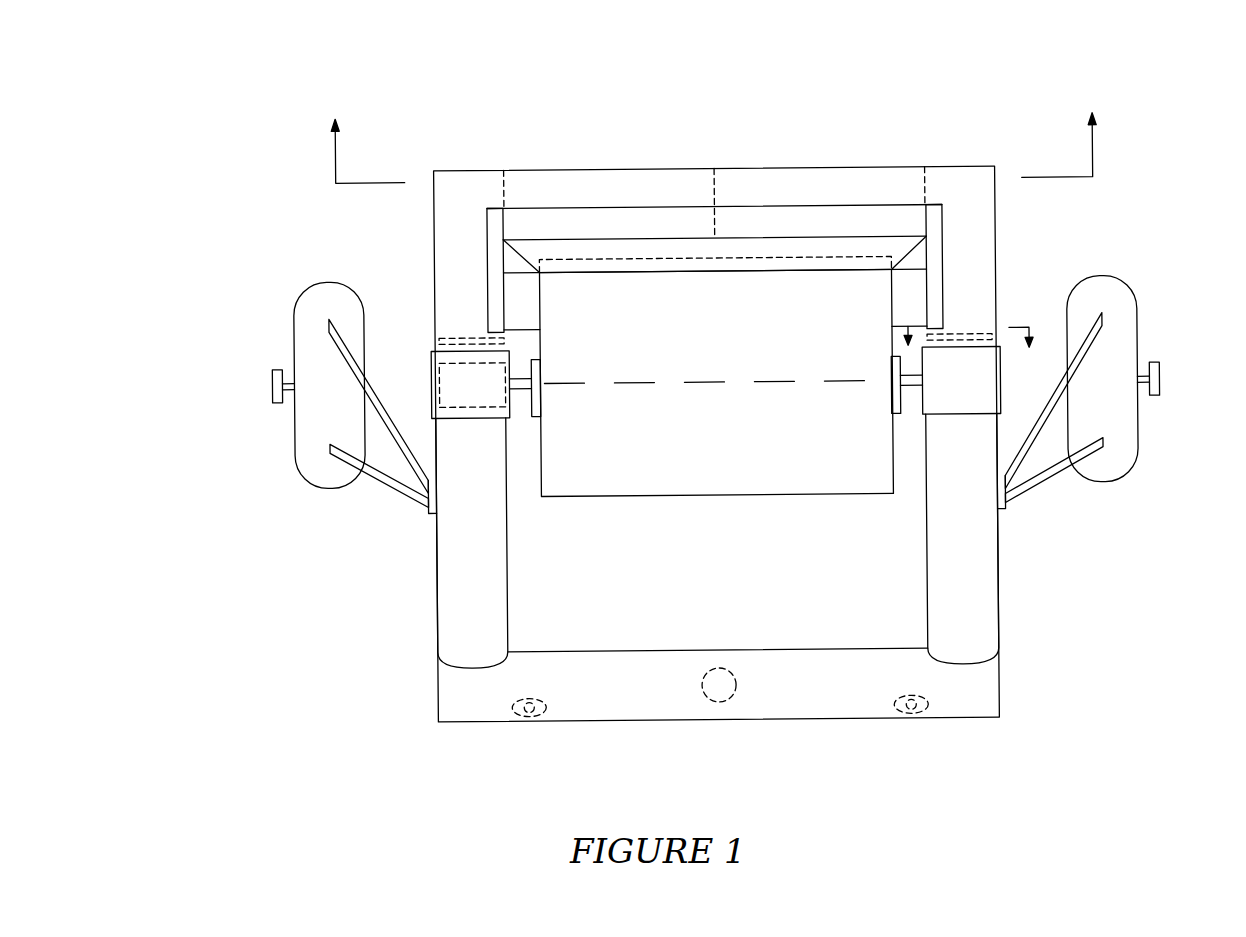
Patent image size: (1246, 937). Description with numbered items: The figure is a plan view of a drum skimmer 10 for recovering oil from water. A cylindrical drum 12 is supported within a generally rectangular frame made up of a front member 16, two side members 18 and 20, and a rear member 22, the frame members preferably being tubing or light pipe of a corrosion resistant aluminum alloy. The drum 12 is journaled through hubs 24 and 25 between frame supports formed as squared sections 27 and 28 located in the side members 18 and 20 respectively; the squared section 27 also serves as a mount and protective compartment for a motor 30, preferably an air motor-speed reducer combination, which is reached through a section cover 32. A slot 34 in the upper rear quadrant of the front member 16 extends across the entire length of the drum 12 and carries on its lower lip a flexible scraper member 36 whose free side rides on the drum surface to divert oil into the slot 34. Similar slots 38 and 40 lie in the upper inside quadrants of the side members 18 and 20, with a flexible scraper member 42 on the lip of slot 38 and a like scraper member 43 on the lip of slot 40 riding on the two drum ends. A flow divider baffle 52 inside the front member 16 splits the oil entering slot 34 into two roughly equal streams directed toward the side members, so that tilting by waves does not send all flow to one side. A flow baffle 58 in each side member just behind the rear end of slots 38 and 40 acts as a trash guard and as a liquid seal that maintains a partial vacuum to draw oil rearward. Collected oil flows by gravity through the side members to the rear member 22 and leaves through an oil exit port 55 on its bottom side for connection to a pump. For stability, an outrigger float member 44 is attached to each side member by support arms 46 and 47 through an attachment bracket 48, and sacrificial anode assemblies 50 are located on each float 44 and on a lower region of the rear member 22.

The drum skimmer 10 is at (707, 95).
The cylindrical drum 12 is at (748, 457).
The front member 16 is at (867, 171).
The side member 18 is at (462, 645).
The side member 20 is at (962, 645).
The rear member 22 is at (838, 683).
The hub 24 is at (537, 400).
The hub 25 is at (898, 402).
The squared section 27 is at (448, 360).
The squared section 28 is at (967, 380).
The motor 30 is at (470, 387).
The section cover 32 is at (432, 389).
The slot 34 is at (808, 213).
The flexible scraper member 36 is at (621, 247).
The slot 38 is at (493, 220).
The slot 40 is at (933, 232).
The flexible scraper member 42 is at (527, 290).
The scraper member 43 is at (907, 290).
The float member 44 is at (313, 440).
The support arm 46 is at (387, 427).
The support arm 47 is at (391, 487).
The attachment bracket 48 is at (427, 510).
The sacrificial anode assembly 50 is at (277, 403).
The flow divider baffle 52 is at (717, 187).
The oil exit port 55 is at (737, 688).
The flow baffle 58 is at (458, 338).